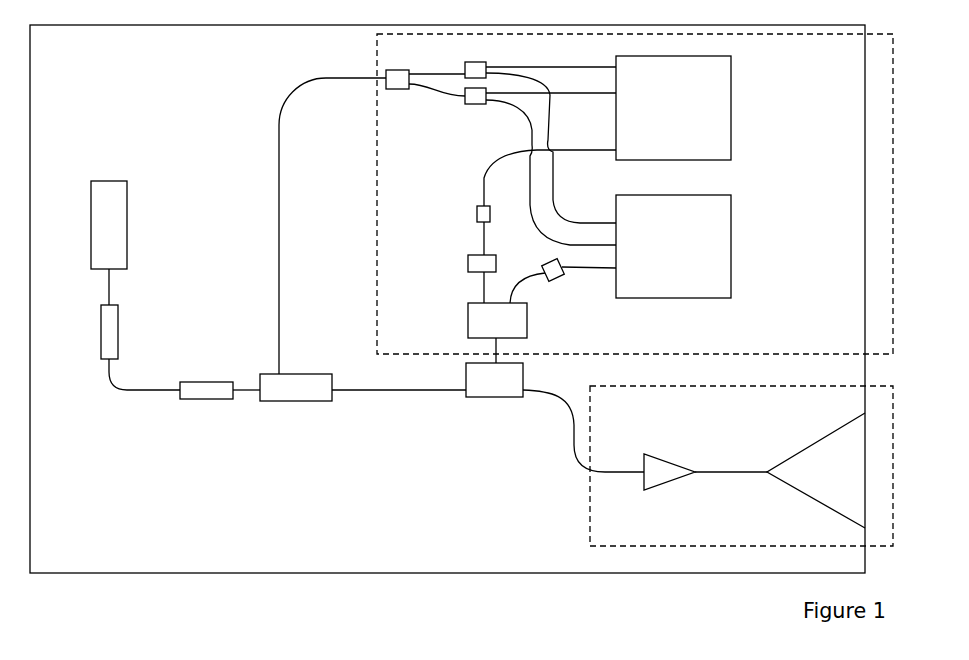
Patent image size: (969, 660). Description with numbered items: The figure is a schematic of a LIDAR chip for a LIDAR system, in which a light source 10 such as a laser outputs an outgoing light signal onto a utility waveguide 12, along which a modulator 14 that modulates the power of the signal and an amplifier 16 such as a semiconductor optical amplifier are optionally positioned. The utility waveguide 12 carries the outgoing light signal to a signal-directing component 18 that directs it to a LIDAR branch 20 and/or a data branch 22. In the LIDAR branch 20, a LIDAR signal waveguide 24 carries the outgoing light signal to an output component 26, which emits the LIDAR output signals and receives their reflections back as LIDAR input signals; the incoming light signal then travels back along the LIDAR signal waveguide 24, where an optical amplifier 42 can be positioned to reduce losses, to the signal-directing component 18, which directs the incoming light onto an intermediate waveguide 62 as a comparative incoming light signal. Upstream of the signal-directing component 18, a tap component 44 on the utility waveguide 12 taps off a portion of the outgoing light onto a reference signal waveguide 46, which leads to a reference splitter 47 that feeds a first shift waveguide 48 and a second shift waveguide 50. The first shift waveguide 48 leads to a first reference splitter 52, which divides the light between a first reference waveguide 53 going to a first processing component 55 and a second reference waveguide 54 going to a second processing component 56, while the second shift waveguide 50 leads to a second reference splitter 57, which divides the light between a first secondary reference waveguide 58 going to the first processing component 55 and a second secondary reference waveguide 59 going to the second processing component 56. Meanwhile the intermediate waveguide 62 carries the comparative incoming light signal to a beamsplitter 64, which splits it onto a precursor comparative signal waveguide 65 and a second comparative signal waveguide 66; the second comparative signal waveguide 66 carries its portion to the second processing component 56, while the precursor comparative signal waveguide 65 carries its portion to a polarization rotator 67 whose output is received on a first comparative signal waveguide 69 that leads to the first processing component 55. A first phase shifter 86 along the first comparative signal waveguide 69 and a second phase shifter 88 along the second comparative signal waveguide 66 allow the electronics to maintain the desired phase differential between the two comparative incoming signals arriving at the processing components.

The light source 10 is at (127, 218).
The utility waveguide 12 is at (108, 283).
The modulator 14 is at (118, 342).
The amplifier 16 is at (200, 382).
The signal-directing component 18 is at (490, 397).
The LIDAR branch 20 is at (893, 455).
The data branch 22 is at (377, 141).
The LIDAR signal waveguide 24 is at (620, 470).
The output component 26 is at (800, 493).
The optical amplifier 42 is at (668, 454).
The tap component 44 is at (292, 401).
The reference signal waveguide 46 is at (279, 122).
The reference splitter 47 is at (386, 70).
The first shift waveguide 48 is at (445, 74).
The second shift waveguide 50 is at (440, 91).
The first reference splitter 52 is at (470, 62).
The first reference waveguide 53 is at (588, 66).
The second reference waveguide 54 is at (545, 88).
The first processing component 55 is at (731, 114).
The second processing component 56 is at (731, 253).
The second reference splitter 57 is at (478, 104).
The first secondary reference waveguide 58 is at (564, 95).
The second secondary reference waveguide 59 is at (508, 113).
The intermediate waveguide 62 is at (527, 338).
The beamsplitter 64 is at (468, 323).
The precursor comparative signal waveguide 65 is at (483, 288).
The second comparative signal waveguide 66 is at (513, 278).
The polarization rotator 67 is at (478, 255).
The first comparative signal waveguide 69 is at (483, 176).
The first phase shifter 86 is at (477, 213).
The second phase shifter 88 is at (558, 281).